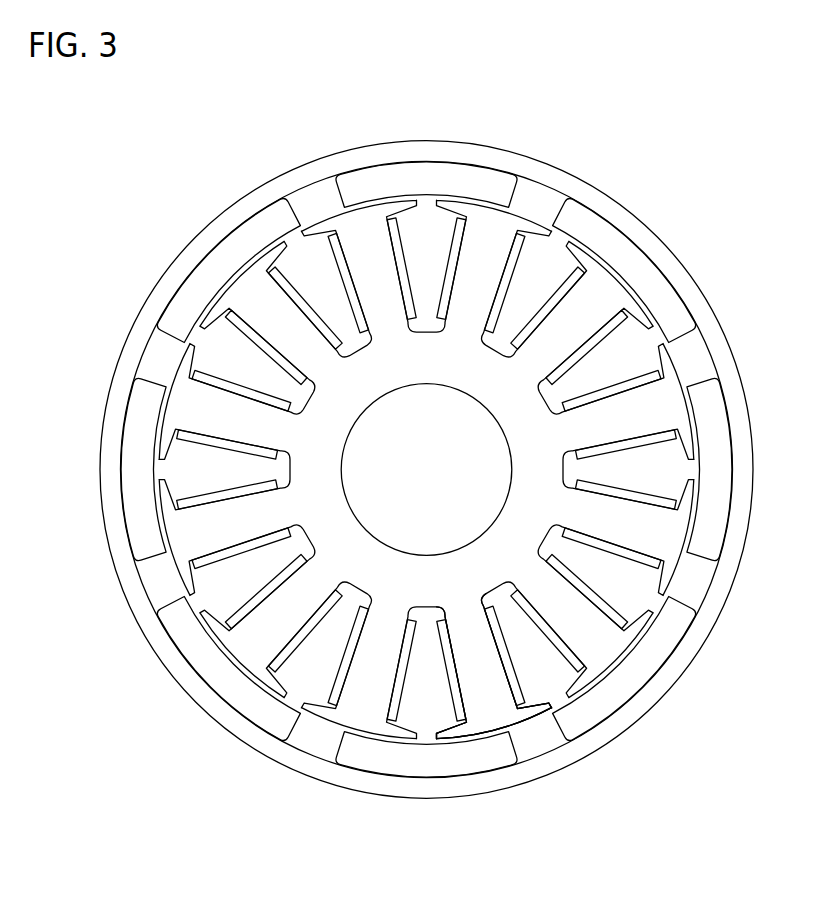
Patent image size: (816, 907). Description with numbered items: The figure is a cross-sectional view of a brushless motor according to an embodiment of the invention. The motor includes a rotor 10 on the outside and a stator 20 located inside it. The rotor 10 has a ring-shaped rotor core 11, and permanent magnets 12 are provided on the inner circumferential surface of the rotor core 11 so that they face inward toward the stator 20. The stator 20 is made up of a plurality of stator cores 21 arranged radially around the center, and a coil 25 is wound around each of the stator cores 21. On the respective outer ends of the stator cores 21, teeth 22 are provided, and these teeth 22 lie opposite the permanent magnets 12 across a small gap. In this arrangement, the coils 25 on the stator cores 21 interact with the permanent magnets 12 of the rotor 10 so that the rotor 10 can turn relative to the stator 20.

The rotor 10 is at (218, 200).
The rotor core 11 is at (308, 178).
The permanent magnet 12 is at (412, 180).
The stator 20 is at (190, 468).
The stator core 21 is at (477, 658).
The tooth 22 is at (463, 731).
The coil 25 is at (338, 685).